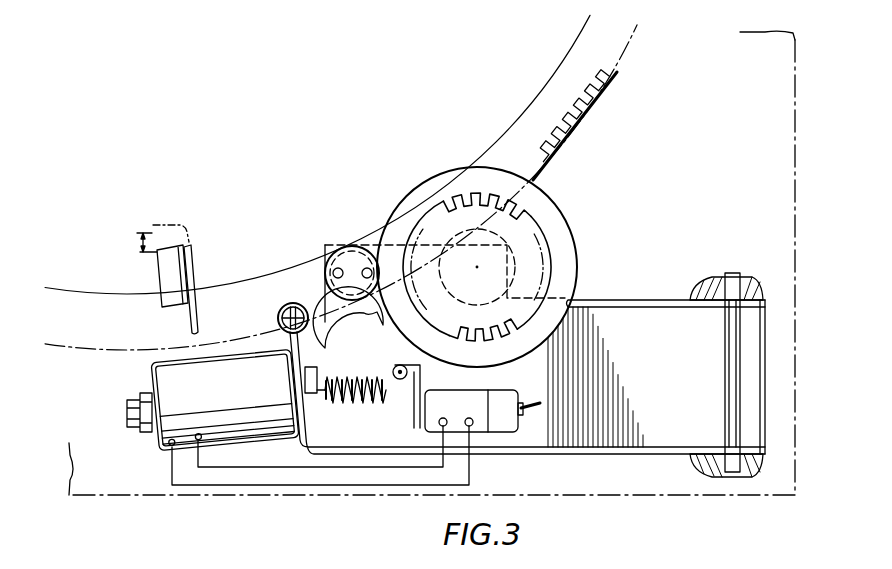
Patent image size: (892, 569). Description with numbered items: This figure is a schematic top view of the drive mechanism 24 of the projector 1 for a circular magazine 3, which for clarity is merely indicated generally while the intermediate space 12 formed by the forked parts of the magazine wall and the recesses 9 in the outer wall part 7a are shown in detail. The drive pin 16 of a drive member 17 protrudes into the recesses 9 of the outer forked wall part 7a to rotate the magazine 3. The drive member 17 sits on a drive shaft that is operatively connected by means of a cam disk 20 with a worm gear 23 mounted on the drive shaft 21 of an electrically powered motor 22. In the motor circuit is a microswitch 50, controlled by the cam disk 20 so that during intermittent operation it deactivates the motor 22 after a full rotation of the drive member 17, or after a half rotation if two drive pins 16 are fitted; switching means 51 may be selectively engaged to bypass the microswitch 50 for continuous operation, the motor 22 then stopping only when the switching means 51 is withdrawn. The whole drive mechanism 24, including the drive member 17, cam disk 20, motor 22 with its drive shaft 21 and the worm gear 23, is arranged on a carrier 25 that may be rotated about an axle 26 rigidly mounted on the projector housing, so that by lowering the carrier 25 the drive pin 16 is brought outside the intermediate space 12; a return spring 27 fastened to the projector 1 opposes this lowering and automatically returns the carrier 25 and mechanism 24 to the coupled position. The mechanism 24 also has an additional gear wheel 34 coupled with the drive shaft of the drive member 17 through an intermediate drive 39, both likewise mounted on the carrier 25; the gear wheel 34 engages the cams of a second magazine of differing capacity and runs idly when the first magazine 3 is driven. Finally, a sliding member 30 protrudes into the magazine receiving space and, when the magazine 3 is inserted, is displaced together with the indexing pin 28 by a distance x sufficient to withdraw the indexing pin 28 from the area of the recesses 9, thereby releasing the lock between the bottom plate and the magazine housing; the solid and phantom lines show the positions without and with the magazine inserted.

The projector 1 is at (723, 220).
The circular magazine 3 is at (328, 165).
The intermediate space 12 is at (565, 68).
The recesses 9 is at (562, 142).
The outer forked wall part 7a is at (596, 110).
The intermediate drive 39 is at (553, 224).
The gear wheel 34 is at (462, 206).
The drive member 17 is at (350, 256).
The drive pin 16 is at (334, 273).
The return spring 27 is at (278, 318).
The drive shaft of motor 21 is at (305, 368).
The worm gear 23 is at (353, 400).
The cam disk 20 is at (369, 349).
The motor 22 is at (232, 403).
The drive mechanism 24 is at (290, 452).
The microswitch 50 is at (463, 412).
The switching means 51 is at (503, 420).
The carrier 25 is at (645, 313).
The axle 26 is at (727, 345).
The indexing pin 28 is at (173, 280).
The sliding member 30 is at (165, 263).
The distance x is at (137, 233).